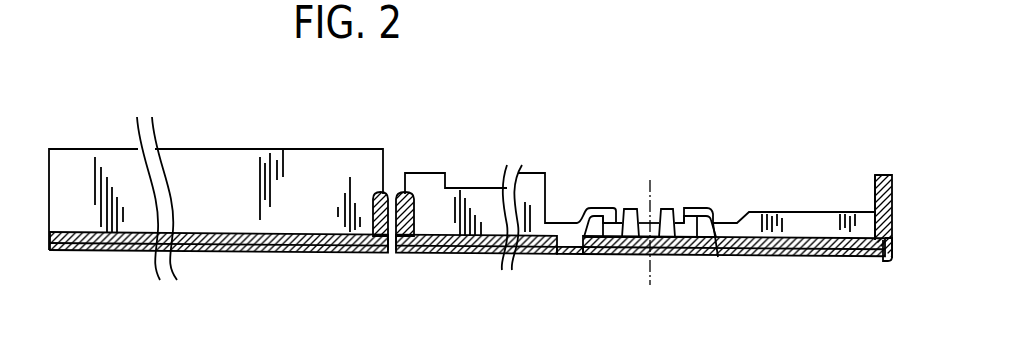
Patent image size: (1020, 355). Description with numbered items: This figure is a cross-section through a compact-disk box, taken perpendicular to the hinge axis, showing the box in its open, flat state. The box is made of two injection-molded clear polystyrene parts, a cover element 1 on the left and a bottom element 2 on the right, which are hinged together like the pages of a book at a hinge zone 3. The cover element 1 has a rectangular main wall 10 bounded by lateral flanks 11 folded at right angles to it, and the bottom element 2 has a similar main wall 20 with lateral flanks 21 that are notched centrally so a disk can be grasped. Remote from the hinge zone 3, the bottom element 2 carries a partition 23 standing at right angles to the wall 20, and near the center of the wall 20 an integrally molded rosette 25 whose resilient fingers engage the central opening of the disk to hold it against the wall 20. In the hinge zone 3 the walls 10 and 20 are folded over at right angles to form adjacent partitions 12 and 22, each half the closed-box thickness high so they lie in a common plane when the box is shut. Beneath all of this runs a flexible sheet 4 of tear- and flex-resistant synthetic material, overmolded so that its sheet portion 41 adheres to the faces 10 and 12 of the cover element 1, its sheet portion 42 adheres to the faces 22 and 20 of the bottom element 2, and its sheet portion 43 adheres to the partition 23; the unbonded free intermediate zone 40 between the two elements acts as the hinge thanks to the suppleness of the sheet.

The cover element 1 is at (223, 190).
The bottom element 2 is at (648, 206).
The hinge zone 3 is at (392, 251).
The flexible sheet 4 is at (490, 196).
The main wall 10 is at (98, 246).
The lateral flanks 11 is at (320, 168).
The partition 12 is at (385, 192).
The main wall 20 is at (797, 254).
The lateral flanks 21 is at (808, 208).
The partition 22 is at (420, 198).
The partition 23 is at (879, 174).
The rosette 25 is at (681, 193).
The free intermediate zone 40 is at (401, 194).
The sheet portion 41 is at (265, 250).
The sheet portion 42 is at (706, 250).
The sheet portion 43 is at (893, 218).